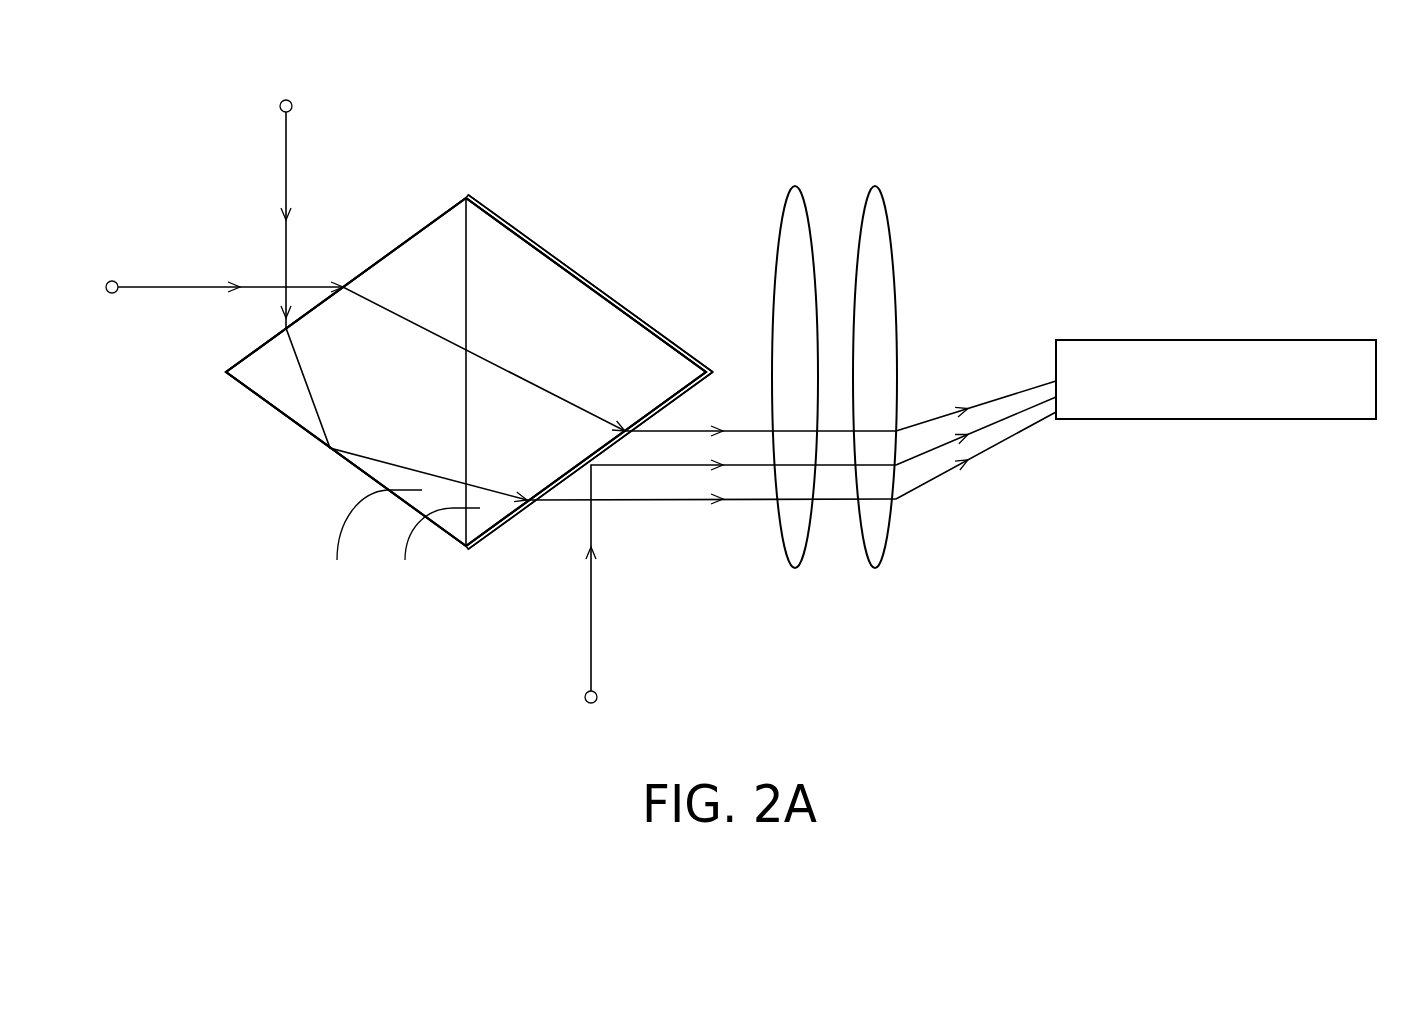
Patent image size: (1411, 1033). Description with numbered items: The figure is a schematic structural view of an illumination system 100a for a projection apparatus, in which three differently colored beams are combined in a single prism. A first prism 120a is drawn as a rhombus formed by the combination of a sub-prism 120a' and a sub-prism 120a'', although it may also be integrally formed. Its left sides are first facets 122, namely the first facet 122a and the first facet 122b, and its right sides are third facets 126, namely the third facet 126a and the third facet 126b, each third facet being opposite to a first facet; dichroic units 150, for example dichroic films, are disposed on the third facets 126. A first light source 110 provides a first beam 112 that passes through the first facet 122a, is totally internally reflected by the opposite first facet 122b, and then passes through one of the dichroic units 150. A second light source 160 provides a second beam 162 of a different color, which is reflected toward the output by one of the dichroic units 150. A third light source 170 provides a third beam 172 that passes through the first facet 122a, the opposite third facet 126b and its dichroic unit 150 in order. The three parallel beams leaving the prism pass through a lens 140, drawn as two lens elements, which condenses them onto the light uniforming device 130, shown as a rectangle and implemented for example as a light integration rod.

The illumination system 100a is at (1372, 703).
The first light source 110 is at (279, 105).
The first beam 112 is at (284, 180).
The first prism 120a is at (466, 424).
The sub-prism 120a' is at (363, 547).
The sub-prism 120a'' is at (426, 556).
The first facets 122 is at (346, 372).
The first facet 122a is at (398, 246).
The first facet 122b is at (345, 458).
The third facets 126 is at (586, 372).
The third facet 126a is at (552, 256).
The third facet 126b is at (513, 519).
The light uniforming device 130 is at (1208, 352).
The lens 140 is at (883, 540).
The dichroic units 150 is at (506, 223).
The second light source 160 is at (597, 697).
The second beam 162 is at (591, 603).
The third light source 170 is at (113, 293).
The third beam 172 is at (175, 291).